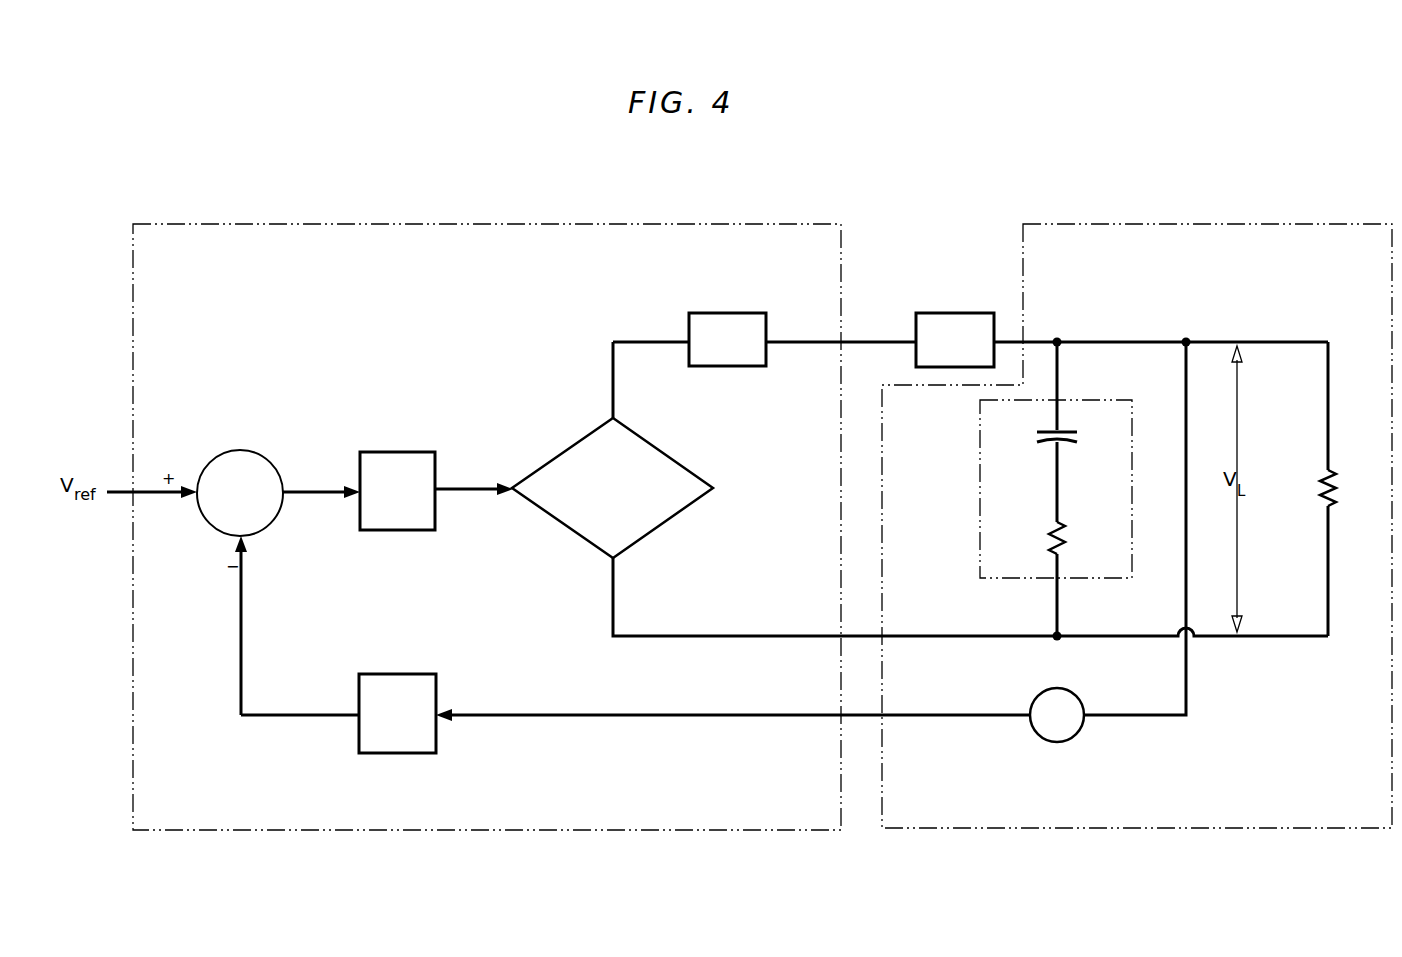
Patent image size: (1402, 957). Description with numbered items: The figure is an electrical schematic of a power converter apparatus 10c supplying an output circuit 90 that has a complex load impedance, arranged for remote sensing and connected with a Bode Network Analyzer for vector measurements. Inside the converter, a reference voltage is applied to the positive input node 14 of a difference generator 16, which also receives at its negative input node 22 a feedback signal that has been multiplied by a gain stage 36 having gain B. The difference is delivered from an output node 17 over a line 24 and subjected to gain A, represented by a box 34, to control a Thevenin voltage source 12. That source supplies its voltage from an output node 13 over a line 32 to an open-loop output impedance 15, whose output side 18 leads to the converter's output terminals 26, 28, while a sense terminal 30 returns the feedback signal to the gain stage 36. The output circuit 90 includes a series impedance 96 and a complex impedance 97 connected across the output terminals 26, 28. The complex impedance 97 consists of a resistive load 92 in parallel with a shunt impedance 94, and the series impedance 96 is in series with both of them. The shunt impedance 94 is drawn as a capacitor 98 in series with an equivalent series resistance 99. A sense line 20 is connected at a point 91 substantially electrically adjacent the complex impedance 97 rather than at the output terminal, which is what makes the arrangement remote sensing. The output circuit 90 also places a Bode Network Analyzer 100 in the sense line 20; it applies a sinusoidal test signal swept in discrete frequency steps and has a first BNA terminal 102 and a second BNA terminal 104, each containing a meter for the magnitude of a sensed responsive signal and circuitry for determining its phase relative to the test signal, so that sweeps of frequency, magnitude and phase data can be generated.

The converter apparatus 10c is at (762, 224).
The Thevenin voltage source 12 is at (680, 458).
The output node 13 is at (612, 418).
The positive input node 14 is at (194, 505).
The open-loop output impedance 15 is at (727, 313).
The difference generator 16 is at (238, 450).
The output node 17 is at (288, 476).
The output side 18 is at (805, 346).
The sense line 20 is at (1188, 678).
The negative input node 22 is at (246, 545).
The line 24 is at (447, 480).
The output terminal 26 is at (836, 340).
The output terminal 28 is at (836, 634).
The sense terminal 30 is at (836, 718).
The line 32 is at (612, 360).
The gain stage 34 is at (398, 452).
The gain stage 36 is at (398, 674).
The output circuit 90 is at (1222, 180).
The point 91 is at (1058, 340).
The resistive load 92 is at (1334, 470).
The shunt impedance 94 is at (980, 490).
The series impedance 96 is at (953, 313).
The complex impedance 97 is at (1140, 830).
The capacitor 98 is at (1068, 442).
The equivalent series resistance 99 is at (1068, 536).
The Bode Network Analyzer 100 is at (1080, 690).
The first BNA terminal 102 is at (1086, 725).
The second BNA terminal 104 is at (1028, 725).